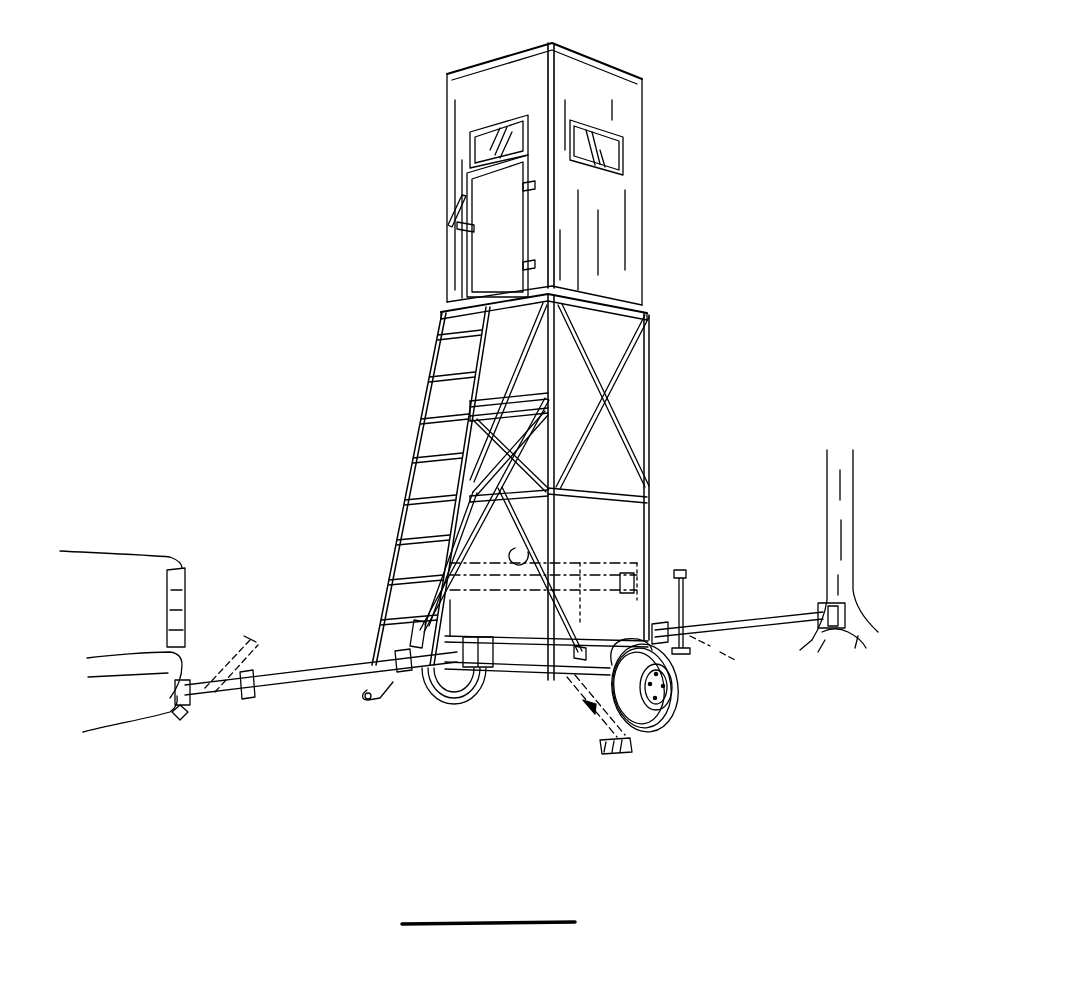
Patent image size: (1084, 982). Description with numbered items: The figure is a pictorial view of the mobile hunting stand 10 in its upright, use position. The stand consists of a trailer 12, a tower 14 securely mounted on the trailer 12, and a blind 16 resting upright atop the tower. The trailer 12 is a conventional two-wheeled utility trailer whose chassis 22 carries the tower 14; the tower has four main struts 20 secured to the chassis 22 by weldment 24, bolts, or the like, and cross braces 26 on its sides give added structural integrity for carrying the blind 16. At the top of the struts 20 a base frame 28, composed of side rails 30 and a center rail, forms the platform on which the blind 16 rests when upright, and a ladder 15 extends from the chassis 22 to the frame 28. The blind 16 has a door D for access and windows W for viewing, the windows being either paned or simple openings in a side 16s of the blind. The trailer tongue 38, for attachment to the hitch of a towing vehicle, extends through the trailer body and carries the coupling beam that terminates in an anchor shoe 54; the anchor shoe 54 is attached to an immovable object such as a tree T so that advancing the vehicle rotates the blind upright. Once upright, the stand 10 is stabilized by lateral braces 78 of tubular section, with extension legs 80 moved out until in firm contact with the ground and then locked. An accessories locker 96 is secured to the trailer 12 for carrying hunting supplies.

The mobile hunting stand 10 is at (727, 292).
The trailer 12 is at (706, 688).
The tower 14 is at (690, 432).
The ladder 15 is at (388, 478).
The blind 16 is at (705, 134).
The side of blind 16s is at (620, 208).
The main struts 20 is at (428, 436).
The chassis 22 is at (560, 690).
The weldment 24 is at (548, 684).
The cross braces 26 is at (498, 348).
The base frame 28 is at (625, 302).
The side rails 30 is at (450, 305).
The tongue 38 is at (290, 700).
The anchor shoe 54 is at (822, 636).
The lateral braces 78 is at (490, 518).
The extension legs 80 is at (630, 740).
The accessories locker 96 is at (715, 635).
The windows W is at (628, 138).
The door D is at (490, 205).
The tree T is at (857, 517).